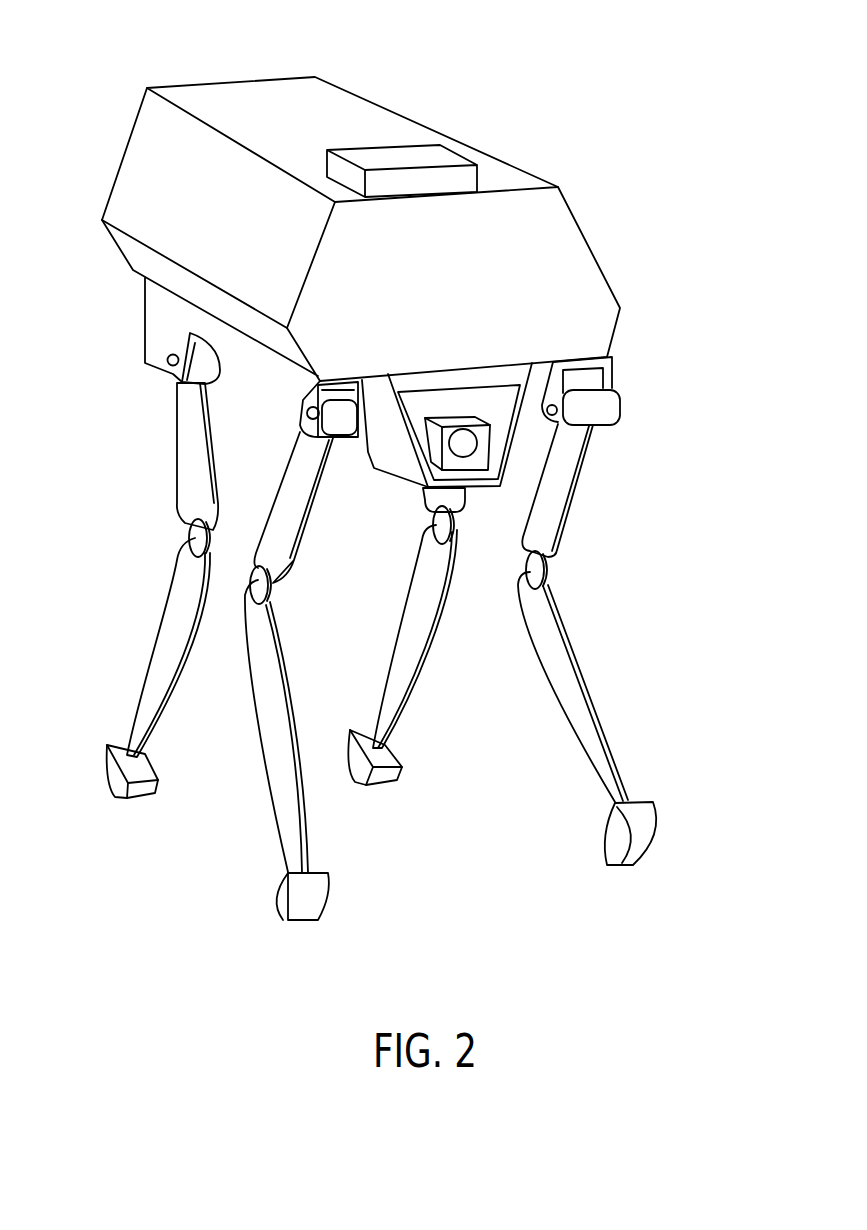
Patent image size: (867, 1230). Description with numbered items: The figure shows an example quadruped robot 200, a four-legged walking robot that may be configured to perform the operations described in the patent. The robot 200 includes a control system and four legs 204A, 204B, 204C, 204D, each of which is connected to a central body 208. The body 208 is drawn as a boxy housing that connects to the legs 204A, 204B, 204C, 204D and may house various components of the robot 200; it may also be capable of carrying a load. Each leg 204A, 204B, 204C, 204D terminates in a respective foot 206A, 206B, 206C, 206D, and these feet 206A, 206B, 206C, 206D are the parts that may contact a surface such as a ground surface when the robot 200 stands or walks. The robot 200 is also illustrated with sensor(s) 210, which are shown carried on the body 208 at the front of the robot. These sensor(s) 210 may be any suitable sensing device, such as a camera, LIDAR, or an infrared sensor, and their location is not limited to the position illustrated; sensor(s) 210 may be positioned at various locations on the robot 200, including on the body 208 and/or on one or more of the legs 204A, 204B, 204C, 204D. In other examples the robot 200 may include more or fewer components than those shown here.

The quadruped robot 200 is at (493, 107).
The body 208 is at (617, 323).
The sensor(s) 210 is at (431, 417).
The leg 204A is at (152, 537).
The leg 204B is at (333, 850).
The leg 204C is at (413, 732).
The leg 204D is at (609, 685).
The foot 206A is at (140, 800).
The foot 206B is at (327, 902).
The foot 206C is at (402, 757).
The foot 206D is at (658, 840).